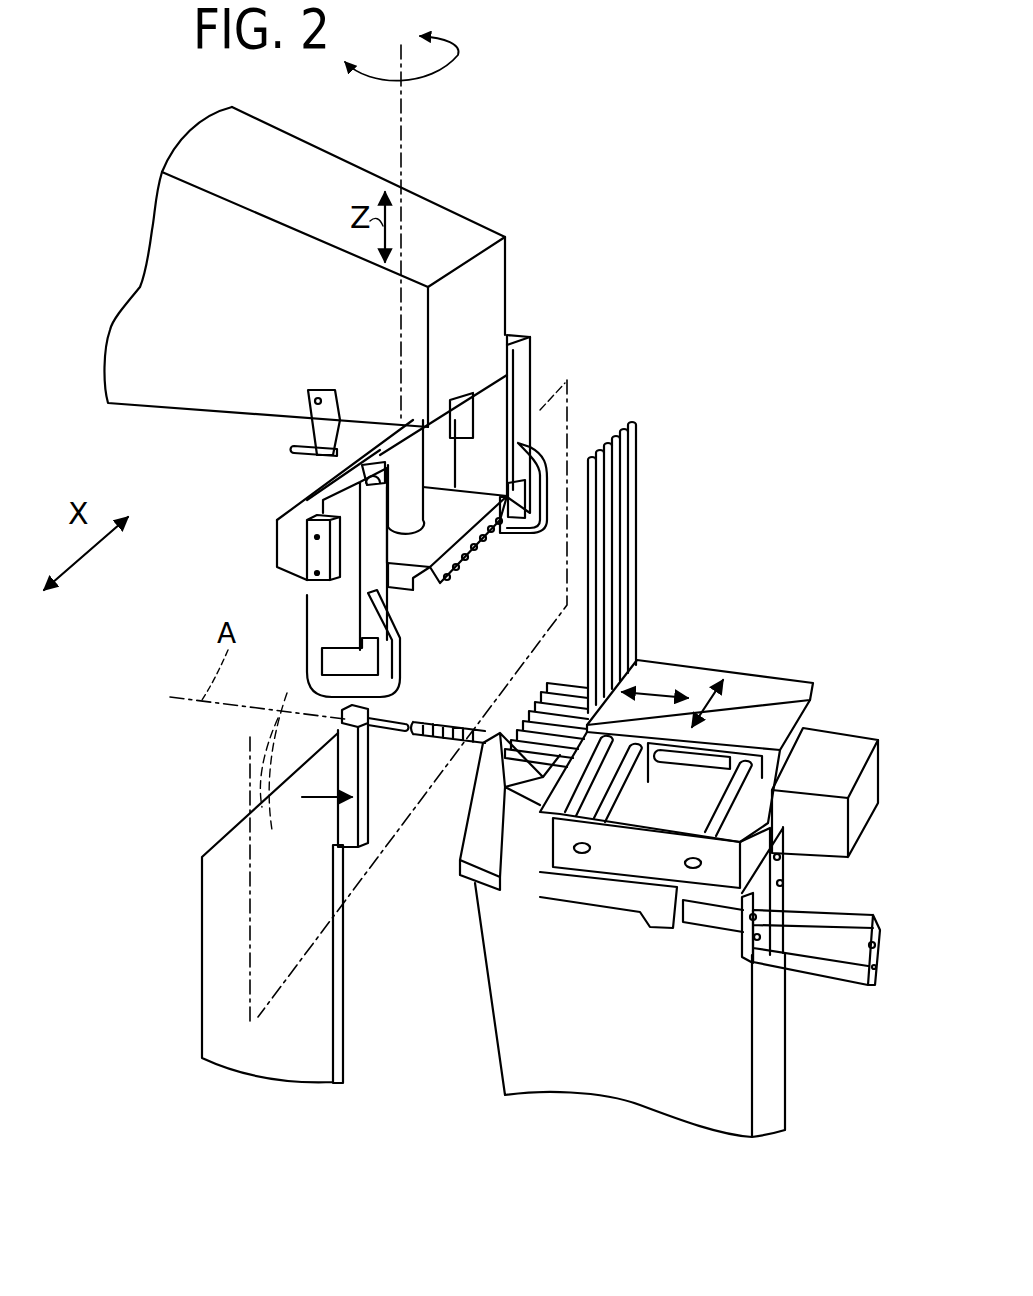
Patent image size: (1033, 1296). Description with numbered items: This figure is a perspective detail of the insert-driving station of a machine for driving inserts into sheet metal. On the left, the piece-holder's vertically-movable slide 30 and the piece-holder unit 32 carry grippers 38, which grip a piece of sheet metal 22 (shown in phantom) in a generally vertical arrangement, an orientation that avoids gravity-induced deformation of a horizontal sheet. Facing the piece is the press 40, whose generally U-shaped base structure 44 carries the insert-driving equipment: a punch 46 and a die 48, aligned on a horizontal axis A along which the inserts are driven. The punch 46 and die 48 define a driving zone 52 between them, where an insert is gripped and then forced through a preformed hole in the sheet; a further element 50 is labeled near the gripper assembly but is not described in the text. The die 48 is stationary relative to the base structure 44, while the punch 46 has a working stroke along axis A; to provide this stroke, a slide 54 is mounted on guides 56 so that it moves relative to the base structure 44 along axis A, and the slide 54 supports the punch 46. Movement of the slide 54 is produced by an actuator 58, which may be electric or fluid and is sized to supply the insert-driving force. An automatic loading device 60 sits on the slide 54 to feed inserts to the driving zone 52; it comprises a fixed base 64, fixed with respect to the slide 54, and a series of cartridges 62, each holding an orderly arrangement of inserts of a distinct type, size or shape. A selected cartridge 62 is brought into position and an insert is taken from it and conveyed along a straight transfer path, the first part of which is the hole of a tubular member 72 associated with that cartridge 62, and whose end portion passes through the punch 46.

The piece of sheet metal 22 is at (247, 772).
The vertically-movable slide 30 is at (467, 228).
The piece-holder unit 32 is at (563, 338).
The grippers 38 is at (557, 473).
The press 40 is at (461, 1032).
The base structure 44 is at (308, 1017).
The punch 46 is at (423, 738).
The die 48 is at (380, 728).
The toothed slab 50 is at (486, 558).
The driving zone 52 is at (410, 710).
The slide 54 is at (473, 825).
The guides 56 is at (717, 915).
The actuator 58 is at (828, 920).
The automatic loading device 60 is at (729, 648).
The cartridges 62 is at (631, 441).
The fixed base 64 is at (753, 827).
The tubular member 72 is at (545, 683).